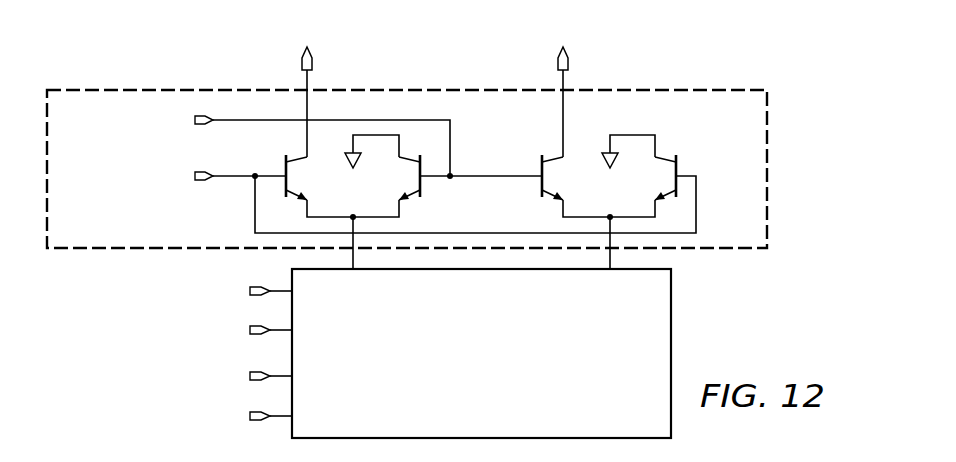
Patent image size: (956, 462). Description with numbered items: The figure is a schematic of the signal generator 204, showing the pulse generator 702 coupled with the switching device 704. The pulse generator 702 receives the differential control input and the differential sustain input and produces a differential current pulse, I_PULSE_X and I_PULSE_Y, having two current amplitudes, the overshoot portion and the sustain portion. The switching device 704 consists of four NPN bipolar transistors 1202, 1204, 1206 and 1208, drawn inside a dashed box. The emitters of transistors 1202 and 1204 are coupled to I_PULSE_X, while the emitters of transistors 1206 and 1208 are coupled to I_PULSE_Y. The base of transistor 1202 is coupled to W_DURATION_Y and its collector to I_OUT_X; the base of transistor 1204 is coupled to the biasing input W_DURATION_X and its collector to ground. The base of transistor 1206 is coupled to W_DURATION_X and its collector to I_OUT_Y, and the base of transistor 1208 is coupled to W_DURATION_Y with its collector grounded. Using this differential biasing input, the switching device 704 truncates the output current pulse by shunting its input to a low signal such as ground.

The signal generator 204 is at (210, 58).
The switching device 704 is at (688, 82).
The pulse generator 702 is at (500, 365).
The NPN bipolar transistor 1202 is at (284, 172).
The NPN bipolar transistor 1204 is at (423, 185).
The NPN bipolar transistor 1206 is at (541, 167).
The NPN bipolar transistor 1208 is at (680, 167).